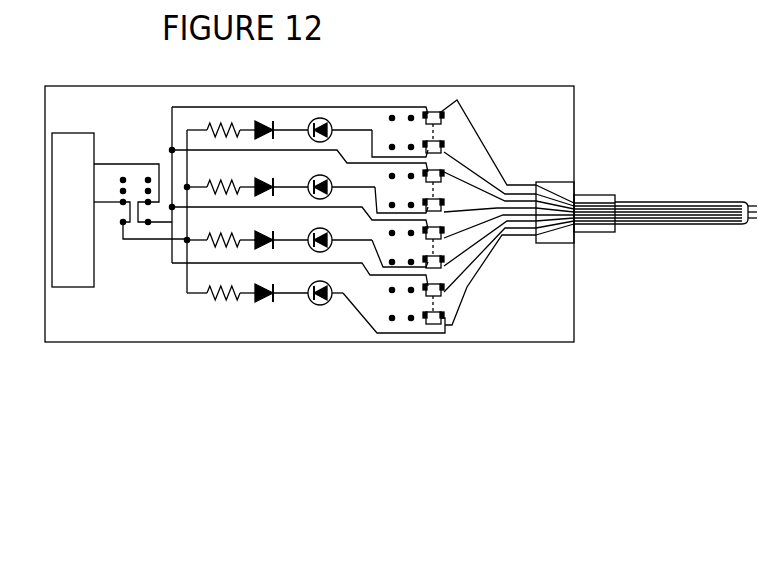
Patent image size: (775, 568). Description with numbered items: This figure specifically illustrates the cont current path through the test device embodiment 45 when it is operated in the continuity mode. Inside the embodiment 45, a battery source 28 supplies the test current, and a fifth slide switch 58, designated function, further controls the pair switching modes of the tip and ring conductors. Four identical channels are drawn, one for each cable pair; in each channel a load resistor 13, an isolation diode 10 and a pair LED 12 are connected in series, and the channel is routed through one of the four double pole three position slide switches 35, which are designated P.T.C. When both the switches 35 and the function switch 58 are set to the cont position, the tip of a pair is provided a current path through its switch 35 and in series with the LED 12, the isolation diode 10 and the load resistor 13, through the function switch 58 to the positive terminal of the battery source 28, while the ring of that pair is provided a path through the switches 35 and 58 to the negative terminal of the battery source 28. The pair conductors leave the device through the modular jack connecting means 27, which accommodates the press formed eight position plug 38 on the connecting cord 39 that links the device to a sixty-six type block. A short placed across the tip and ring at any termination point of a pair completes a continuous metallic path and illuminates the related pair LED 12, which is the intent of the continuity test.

The isolation diode 10 is at (251, 303).
The LED 12 is at (318, 303).
The load resistor 13 is at (213, 303).
The modular jack connecting means 27 is at (556, 184).
The battery source 28 is at (78, 133).
The double pole three position slide switches 35 is at (408, 324).
The press formed eight position plug 38 is at (605, 193).
The connecting cord 39 is at (667, 193).
The embodiment 45 is at (268, 86).
The function slide switch 58 is at (118, 178).